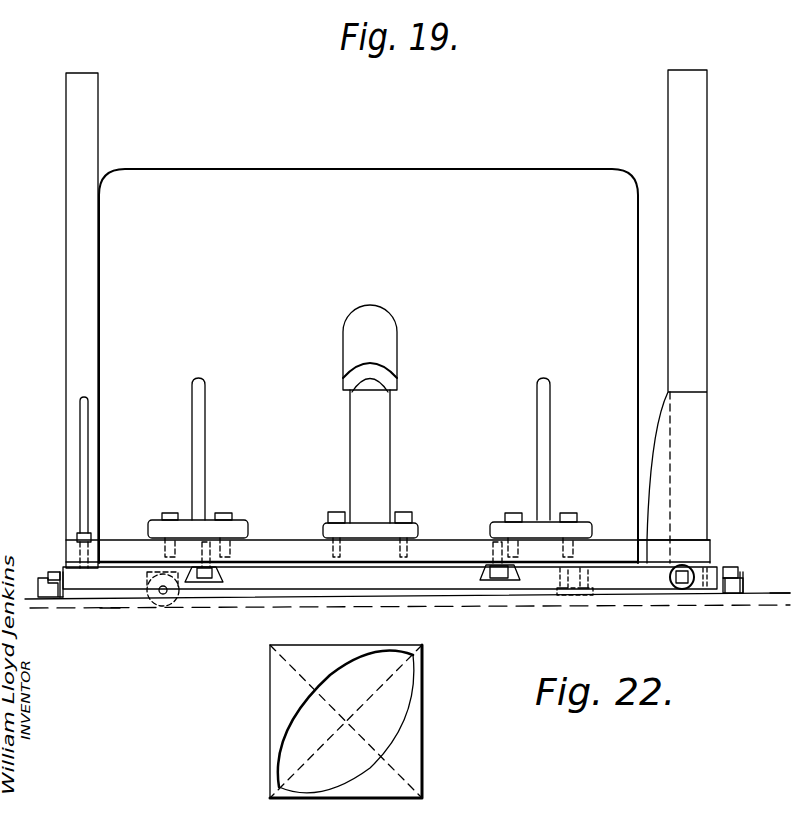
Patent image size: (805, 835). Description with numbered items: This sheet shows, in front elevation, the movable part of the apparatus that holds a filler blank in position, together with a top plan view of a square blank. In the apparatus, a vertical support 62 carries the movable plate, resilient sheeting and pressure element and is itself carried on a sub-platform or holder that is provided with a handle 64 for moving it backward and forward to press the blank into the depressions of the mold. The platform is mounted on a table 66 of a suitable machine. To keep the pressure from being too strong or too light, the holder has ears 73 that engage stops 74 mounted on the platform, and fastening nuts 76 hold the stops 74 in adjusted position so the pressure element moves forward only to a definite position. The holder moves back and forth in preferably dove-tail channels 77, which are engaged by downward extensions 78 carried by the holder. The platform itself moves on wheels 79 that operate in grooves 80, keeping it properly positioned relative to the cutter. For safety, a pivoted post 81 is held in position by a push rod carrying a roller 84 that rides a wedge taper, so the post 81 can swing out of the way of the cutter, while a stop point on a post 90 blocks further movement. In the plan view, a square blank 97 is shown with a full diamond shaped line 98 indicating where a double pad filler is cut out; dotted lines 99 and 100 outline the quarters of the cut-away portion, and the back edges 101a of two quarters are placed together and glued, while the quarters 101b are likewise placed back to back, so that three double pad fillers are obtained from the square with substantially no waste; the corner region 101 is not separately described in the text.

In FIG. 19, the vertical support 62 is at (273, 280).
In FIG. 19, the handle 64 is at (358, 450).
In FIG. 19, the table 66 is at (768, 594).
In FIG. 19, the ears 73 is at (57, 597).
In FIG. 19, the stops 74 is at (40, 578).
In FIG. 19, the fastening nuts 76 is at (52, 571).
In FIG. 19, the channels 77 is at (212, 582).
In FIG. 19, the downward extensions 78 is at (195, 583).
In FIG. 19, the wheels 79 is at (160, 605).
In FIG. 19, the grooves 80 is at (98, 615).
In FIG. 19, the post 81 is at (703, 366).
In FIG. 19, the roller 84 is at (680, 587).
In FIG. 19, the post 90 is at (75, 320).
In FIG. 22, the blank 97 is at (400, 631).
In FIG. 22, the diamond shaped line 98 is at (412, 713).
In FIG. 22, the dotted line 99 is at (413, 655).
In FIG. 22, the dotted line 100 is at (400, 773).
In FIG. 22, the corner 101 is at (283, 800).
In FIG. 22, the back edges 101a is at (268, 742).
In FIG. 22, the quarters 101b is at (315, 645).